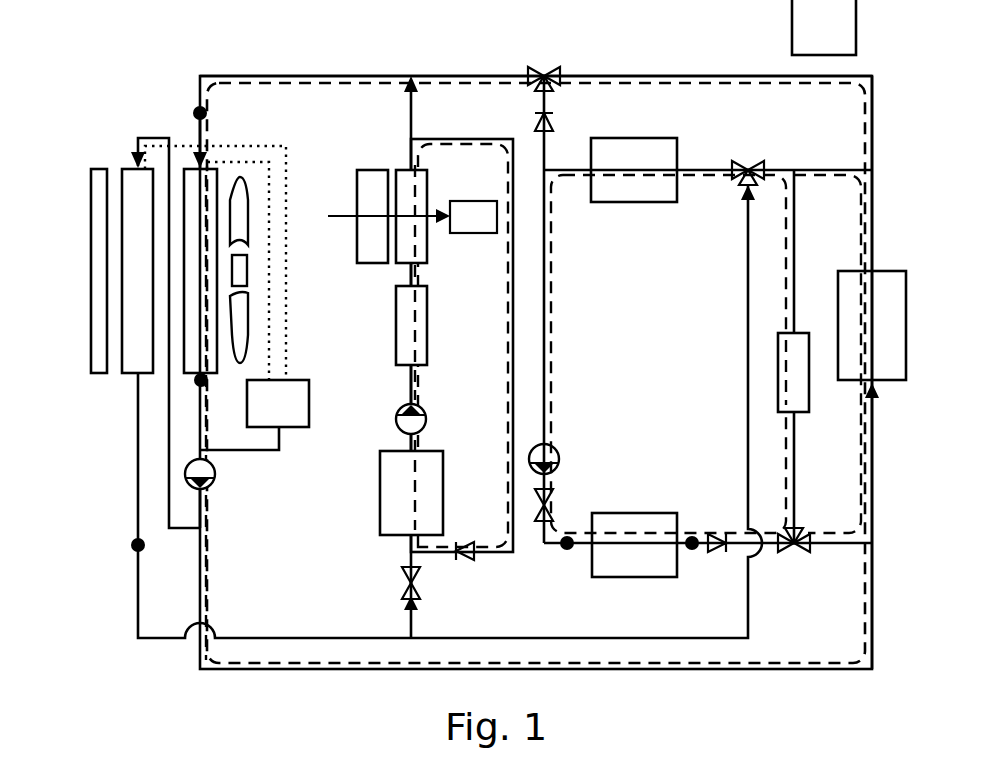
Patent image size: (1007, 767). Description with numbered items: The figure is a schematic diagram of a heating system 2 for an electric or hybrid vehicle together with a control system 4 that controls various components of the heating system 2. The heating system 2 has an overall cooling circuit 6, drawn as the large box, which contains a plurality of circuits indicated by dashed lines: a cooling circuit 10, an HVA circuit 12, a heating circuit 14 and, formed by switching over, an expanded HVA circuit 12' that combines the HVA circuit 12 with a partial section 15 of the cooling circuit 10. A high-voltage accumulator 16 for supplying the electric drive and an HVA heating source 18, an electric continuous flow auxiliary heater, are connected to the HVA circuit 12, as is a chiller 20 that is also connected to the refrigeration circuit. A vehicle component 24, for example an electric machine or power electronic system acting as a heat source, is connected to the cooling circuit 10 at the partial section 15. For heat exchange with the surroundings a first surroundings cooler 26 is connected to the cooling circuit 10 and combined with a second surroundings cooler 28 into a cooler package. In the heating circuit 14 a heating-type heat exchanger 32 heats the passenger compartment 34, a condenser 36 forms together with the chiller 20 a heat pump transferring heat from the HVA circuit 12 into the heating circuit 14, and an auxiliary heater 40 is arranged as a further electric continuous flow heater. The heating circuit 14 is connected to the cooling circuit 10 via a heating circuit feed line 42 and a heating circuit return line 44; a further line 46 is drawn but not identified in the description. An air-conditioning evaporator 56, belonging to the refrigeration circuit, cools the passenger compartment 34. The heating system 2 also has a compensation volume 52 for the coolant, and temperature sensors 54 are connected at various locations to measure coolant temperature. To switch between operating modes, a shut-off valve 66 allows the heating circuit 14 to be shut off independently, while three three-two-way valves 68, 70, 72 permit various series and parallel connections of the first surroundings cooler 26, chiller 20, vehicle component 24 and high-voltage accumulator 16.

The heating system 2 is at (90, 24).
The control system 4 is at (824, 27).
The overall cooling circuit 6 is at (255, 42).
The cooling circuit 10 is at (345, 75).
The HVA circuit 12 is at (668, 354).
The expanded HVA circuit 12' is at (773, 354).
The heating circuit 14 is at (508, 400).
The partial section 15 is at (873, 242).
The high-voltage accumulator 16 is at (634, 545).
The HVA heating source 18 is at (795, 412).
The chiller 20 is at (634, 170).
The vehicle component 24 is at (872, 334).
The first surroundings cooler 26 is at (185, 192).
The second surroundings cooler 28 is at (122, 213).
The heating-type heat exchanger 32 is at (430, 240).
The passenger compartment 34 is at (412, 217).
The condenser 36 is at (380, 516).
The auxiliary heater 40 is at (396, 335).
The heating circuit feed line 42 is at (411, 622).
The heating circuit return line 44 is at (411, 108).
The coolant line 46 is at (200, 528).
The compensation volume 52 is at (255, 415).
The temperature sensors 54 is at (200, 113).
The air-conditioning evaporator 56 is at (357, 203).
The shut-off valve 66 is at (390, 578).
The 3/2-way valve 68 is at (832, 506).
The 3/2-way valve 70 is at (542, 60).
The 3/2-way valve 72 is at (751, 145).